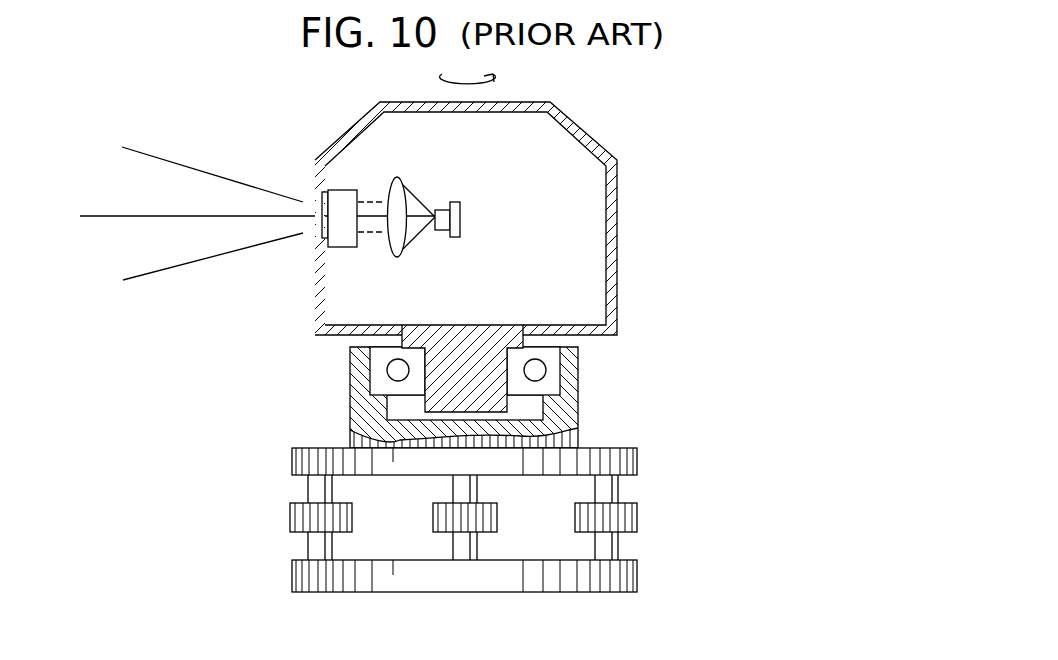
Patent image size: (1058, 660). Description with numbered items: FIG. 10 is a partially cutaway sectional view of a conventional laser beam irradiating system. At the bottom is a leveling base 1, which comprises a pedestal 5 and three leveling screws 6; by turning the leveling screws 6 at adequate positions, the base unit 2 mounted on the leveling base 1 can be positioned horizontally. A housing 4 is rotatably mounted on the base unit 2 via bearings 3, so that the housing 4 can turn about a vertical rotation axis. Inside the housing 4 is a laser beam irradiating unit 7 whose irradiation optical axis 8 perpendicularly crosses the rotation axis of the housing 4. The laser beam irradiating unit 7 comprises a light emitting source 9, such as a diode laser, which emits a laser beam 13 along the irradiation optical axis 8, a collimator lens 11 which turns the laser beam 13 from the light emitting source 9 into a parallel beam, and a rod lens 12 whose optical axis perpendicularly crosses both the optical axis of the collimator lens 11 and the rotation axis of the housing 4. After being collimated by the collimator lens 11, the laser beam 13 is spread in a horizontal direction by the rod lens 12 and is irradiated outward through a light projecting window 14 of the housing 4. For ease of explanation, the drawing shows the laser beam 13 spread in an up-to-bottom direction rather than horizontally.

The leveling base 1 is at (651, 486).
The base unit 2 is at (608, 448).
The bearings 3 is at (550, 380).
The housing 4 is at (617, 248).
The pedestal 5 is at (637, 582).
The leveling screws 6 is at (637, 523).
The laser beam irradiating unit 7 is at (464, 183).
The irradiation optical axis 8 is at (172, 215).
The light emitting source 9 is at (454, 238).
The collimator lens 11 is at (403, 188).
The rod lens 12 is at (352, 192).
The laser beam 13 is at (200, 260).
The light projecting window 14 is at (308, 227).